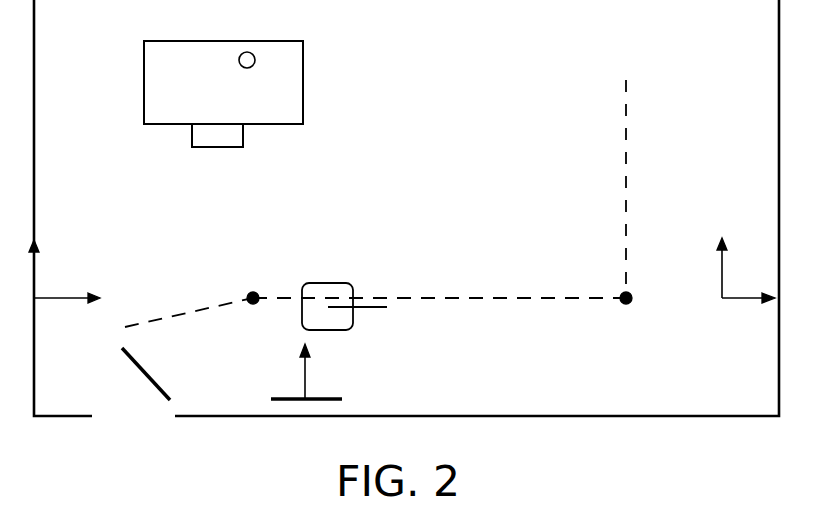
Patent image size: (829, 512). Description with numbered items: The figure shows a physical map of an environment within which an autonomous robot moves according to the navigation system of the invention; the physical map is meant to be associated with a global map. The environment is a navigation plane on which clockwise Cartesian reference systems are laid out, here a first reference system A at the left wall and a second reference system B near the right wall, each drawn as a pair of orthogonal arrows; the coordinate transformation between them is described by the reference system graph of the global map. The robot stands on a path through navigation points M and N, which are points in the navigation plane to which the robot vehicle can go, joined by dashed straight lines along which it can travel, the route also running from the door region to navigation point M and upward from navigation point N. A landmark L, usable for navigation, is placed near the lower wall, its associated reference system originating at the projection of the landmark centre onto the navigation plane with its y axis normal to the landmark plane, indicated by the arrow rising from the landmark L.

The reference system A is at (64, 271).
The reference system B is at (746, 270).
The navigation point M is at (247, 277).
The navigation point N is at (638, 285).
The landmark L is at (320, 371).
The autonomous robot is at (351, 291).